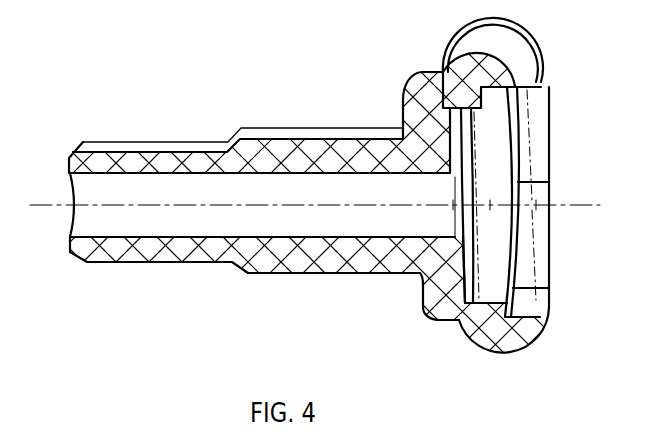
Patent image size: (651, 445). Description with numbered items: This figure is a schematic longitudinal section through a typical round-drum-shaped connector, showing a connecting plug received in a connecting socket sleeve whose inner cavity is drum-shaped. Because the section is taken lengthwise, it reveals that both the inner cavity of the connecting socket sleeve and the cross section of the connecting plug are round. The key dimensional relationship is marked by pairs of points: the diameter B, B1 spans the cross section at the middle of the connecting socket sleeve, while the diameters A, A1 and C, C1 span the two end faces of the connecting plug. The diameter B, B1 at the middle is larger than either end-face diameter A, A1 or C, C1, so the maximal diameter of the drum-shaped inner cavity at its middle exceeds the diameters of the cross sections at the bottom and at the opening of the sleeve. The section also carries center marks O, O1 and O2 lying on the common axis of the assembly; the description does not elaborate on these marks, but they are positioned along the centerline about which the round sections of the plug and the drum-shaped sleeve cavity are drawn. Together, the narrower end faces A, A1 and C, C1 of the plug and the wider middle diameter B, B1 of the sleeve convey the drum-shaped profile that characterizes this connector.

The end face diameter point of connecting plug A is at (517, 234).
The end face diameter point of connecting plug A1 is at (528, 200).
The middle cross-section diameter point of connecting socket sleeve B is at (504, 345).
The middle cross-section diameter point of connecting socket sleeve B1 is at (493, 52).
The end face diameter point of connecting plug C is at (446, 233).
The end face diameter point of connecting plug C1 is at (460, 107).
The center of outer sphere O is at (540, 215).
The center of ball O1 is at (496, 216).
The center of socket ring O2 is at (439, 216).